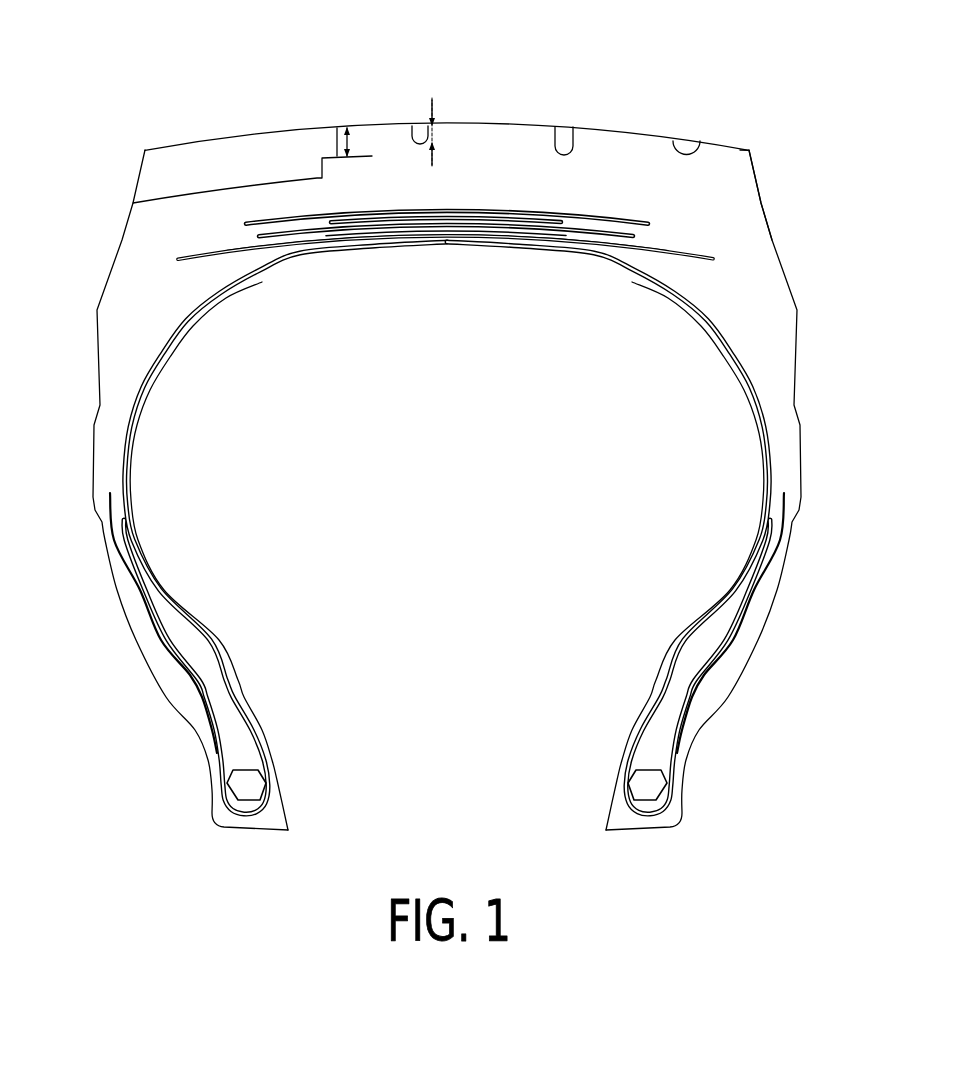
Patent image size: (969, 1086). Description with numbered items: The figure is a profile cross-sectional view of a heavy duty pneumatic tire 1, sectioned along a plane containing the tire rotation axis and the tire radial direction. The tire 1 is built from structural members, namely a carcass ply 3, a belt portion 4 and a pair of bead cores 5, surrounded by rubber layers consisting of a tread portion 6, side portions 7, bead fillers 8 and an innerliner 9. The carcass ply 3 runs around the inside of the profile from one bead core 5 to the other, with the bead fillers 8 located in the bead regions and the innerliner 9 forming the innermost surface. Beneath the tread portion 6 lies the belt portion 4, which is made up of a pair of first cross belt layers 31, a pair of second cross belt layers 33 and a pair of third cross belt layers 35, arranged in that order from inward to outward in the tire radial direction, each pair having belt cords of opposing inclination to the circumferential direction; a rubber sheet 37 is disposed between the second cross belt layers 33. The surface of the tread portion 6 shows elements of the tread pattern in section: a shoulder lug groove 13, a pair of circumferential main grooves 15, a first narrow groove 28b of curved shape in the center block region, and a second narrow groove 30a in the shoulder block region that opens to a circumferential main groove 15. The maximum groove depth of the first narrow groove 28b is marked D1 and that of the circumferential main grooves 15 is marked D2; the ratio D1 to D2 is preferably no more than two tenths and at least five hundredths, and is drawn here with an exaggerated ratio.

The heavy duty pneumatic tire 1 is at (746, 66).
The carcass ply 3 is at (757, 417).
The belt portion 4 is at (500, 275).
The bead core 5 is at (248, 792).
The tread portion 6 is at (749, 146).
The side portion 7 is at (800, 460).
The bead filler 8 is at (658, 744).
The innerliner 9 is at (757, 553).
The shoulder lug groove 13 is at (237, 150).
The circumferential main groove 15 is at (329, 137).
The first narrow groove 28b is at (418, 122).
The second narrow groove 30a is at (686, 146).
The first cross belt layer 31 is at (627, 252).
The second cross belt layer 33 is at (560, 249).
The third cross belt layer 35 is at (250, 226).
The rubber sheet 37 is at (379, 233).
The maximum groove depth of the first narrow grooves D1 is at (436, 118).
The maximum groove depth of the circumferential main grooves D2 is at (347, 125).